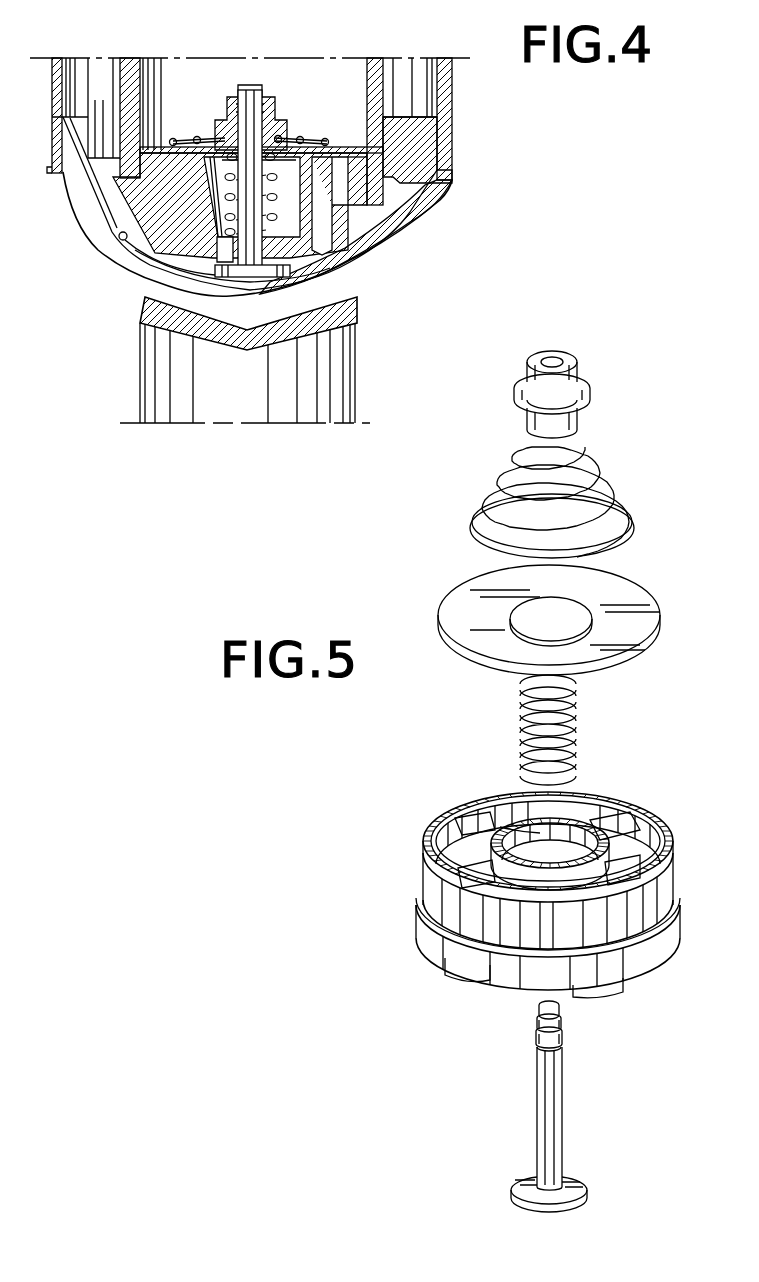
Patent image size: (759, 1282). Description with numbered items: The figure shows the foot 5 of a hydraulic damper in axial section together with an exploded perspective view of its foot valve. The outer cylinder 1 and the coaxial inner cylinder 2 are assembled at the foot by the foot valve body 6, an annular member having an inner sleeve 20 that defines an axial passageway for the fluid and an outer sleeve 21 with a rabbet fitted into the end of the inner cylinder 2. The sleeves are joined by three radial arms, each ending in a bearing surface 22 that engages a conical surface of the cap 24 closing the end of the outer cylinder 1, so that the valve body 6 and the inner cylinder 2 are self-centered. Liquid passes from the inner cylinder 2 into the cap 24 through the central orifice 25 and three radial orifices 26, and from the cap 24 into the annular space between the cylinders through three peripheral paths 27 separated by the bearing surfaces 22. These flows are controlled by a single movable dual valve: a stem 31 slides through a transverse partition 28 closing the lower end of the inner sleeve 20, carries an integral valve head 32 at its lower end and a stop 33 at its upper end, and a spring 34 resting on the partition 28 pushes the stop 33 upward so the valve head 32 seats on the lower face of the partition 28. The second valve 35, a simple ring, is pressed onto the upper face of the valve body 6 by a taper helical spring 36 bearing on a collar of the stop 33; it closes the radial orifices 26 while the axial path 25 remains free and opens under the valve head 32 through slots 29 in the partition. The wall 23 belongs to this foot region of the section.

In FIG. 4, the outer cylinder 1 is at (445, 82).
In FIG. 4, the inner cylinder 2 is at (368, 74).
In FIG. 4, the foot 5 is at (85, 316).
In FIG. 4, the foot valve body 6 is at (139, 204).
In FIG. 5, the foot valve body 6 is at (521, 894).
In FIG. 4, the inner sleeve 20 is at (268, 186).
In FIG. 5, the inner sleeve 20 is at (497, 827).
In FIG. 4, the outer sleeve 21 is at (366, 157).
In FIG. 5, the outer sleeve 21 is at (447, 857).
In FIG. 4, the bearing surfaces 22 is at (128, 253).
In FIG. 5, the bearing surfaces 22 is at (462, 983).
In FIG. 4, the cap wall 23 is at (120, 247).
In FIG. 4, the cap 24 is at (93, 233).
In FIG. 4, the central orifice 25 is at (283, 197).
In FIG. 5, the central orifice 25 is at (557, 860).
In FIG. 4, the radial orifices 26 is at (340, 187).
In FIG. 5, the radial orifices 26 is at (627, 823).
In FIG. 4, the peripheral paths 27 is at (245, 360).
In FIG. 5, the peripheral paths 27 is at (667, 953).
In FIG. 4, the transverse partition 28 is at (280, 250).
In FIG. 4, the slots 29 is at (217, 250).
In FIG. 4, the stem 31 is at (248, 88).
In FIG. 5, the stem 31 is at (537, 1082).
In FIG. 4, the valve head 32 is at (243, 277).
In FIG. 5, the valve head 32 is at (580, 1177).
In FIG. 4, the stop 33 is at (268, 100).
In FIG. 5, the stop 33 is at (585, 385).
In FIG. 4, the spring 34 is at (228, 176).
In FIG. 5, the spring 34 is at (583, 718).
In FIG. 4, the second valve 35 is at (348, 147).
In FIG. 5, the second valve 35 is at (645, 612).
In FIG. 4, the taper helical spring 36 is at (173, 138).
In FIG. 5, the taper helical spring 36 is at (615, 512).